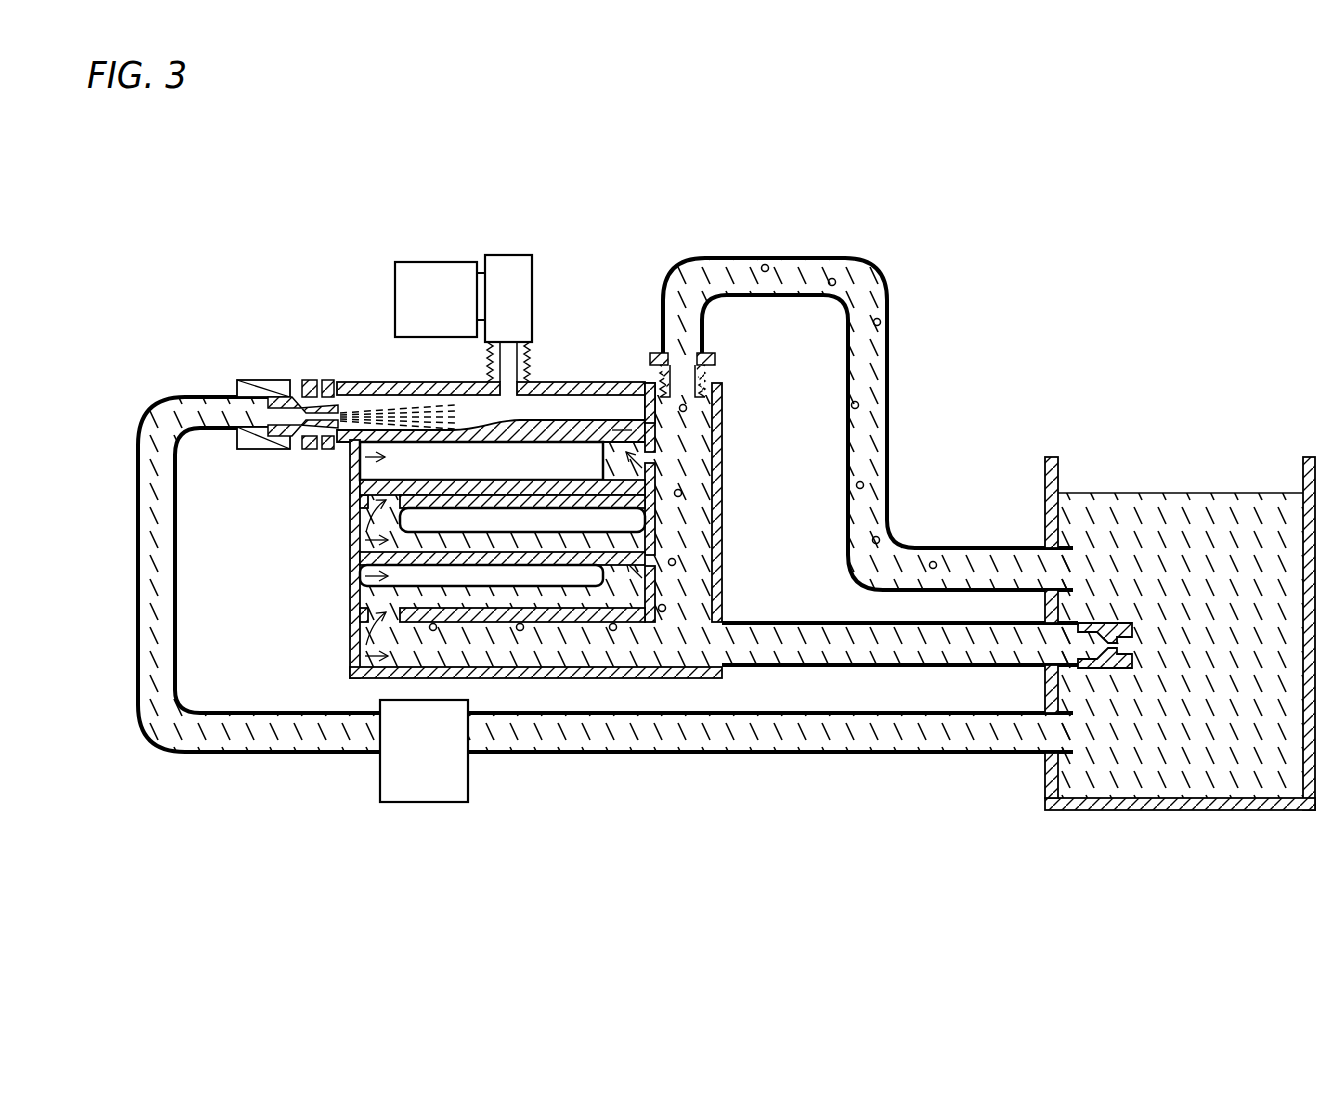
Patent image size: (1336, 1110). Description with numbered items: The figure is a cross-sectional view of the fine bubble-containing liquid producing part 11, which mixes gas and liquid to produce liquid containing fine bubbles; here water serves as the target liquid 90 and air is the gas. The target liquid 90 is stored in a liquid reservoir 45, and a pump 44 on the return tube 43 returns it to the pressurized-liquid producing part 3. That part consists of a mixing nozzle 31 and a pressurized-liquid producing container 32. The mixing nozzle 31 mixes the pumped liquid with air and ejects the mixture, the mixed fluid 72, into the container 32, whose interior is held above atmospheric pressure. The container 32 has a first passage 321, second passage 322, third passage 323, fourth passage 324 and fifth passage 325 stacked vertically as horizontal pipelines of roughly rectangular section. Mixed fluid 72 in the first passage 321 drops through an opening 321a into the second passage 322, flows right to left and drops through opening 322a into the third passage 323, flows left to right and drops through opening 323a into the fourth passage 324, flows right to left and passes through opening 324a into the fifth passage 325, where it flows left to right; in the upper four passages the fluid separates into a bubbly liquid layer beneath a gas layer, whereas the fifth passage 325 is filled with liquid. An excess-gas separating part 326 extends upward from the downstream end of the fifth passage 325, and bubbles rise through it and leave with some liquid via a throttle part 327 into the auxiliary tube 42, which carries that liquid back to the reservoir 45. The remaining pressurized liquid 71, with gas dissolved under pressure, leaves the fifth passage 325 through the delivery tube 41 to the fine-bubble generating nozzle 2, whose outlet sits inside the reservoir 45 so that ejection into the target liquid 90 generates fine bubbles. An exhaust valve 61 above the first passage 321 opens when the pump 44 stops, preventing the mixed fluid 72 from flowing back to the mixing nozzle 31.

The fine bubble-containing liquid producing part 11 is at (283, 191).
The pressurized-liquid producing part 3 is at (610, 263).
The exhaust valve 61 is at (505, 253).
The mixing nozzle 31 is at (277, 393).
The first passage 321 is at (415, 398).
The throttle part 327 is at (706, 380).
The mixed fluid 72 is at (657, 428).
The second passage 322 is at (380, 458).
The opening 321a is at (645, 462).
The pressurized-liquid producing container 32 is at (503, 516).
The opening 322a is at (388, 506).
The third passage 323 is at (388, 541).
The excess-gas separating part 326 is at (704, 532).
The fourth passage 324 is at (388, 577).
The opening 323a is at (645, 575).
The opening 324a is at (388, 622).
The fifth passage 325 is at (388, 656).
The auxiliary tube 42 is at (890, 440).
The delivery tube 41 is at (940, 622).
The pressurized liquid 71 is at (822, 630).
The liquid reservoir 45 is at (1046, 460).
The target liquid 90 is at (1222, 495).
The pump 44 is at (455, 787).
The return tube 43 is at (655, 755).
The fine-bubble generating nozzle 2 is at (1107, 668).